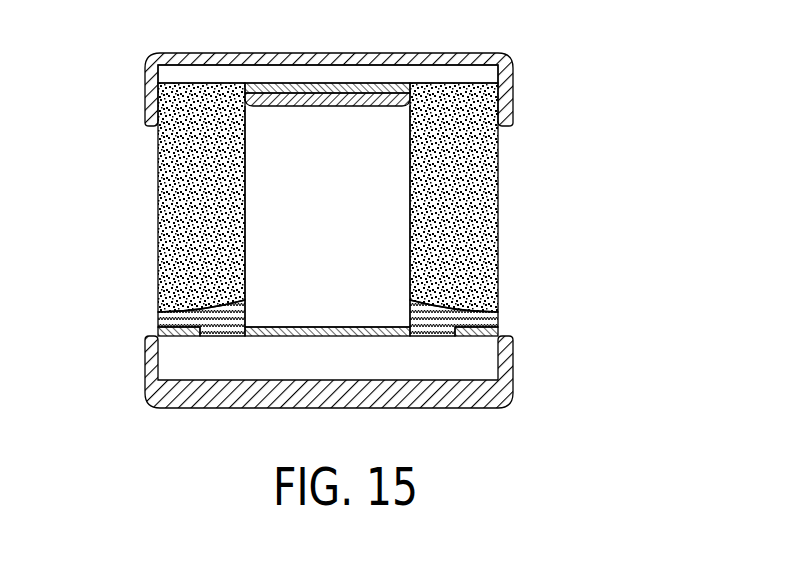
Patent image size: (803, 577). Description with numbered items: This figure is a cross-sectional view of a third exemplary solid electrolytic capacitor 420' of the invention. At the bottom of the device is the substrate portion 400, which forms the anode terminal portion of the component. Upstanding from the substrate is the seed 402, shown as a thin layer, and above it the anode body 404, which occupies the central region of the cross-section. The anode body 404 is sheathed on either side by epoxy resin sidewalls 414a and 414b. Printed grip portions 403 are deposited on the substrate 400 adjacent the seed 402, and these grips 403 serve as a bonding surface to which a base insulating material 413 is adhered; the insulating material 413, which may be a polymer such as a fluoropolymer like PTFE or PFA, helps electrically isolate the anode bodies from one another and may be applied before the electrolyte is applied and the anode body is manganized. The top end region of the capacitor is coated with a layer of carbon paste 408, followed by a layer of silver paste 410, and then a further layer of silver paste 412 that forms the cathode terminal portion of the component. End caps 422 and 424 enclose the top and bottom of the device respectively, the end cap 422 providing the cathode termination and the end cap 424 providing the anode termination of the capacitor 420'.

The substrate portion 400 is at (212, 373).
The seed 402 is at (333, 328).
The printed grip portion 403 is at (158, 340).
The anode body 404 is at (346, 214).
The layer of carbon paste 408 is at (297, 98).
The layer of silver paste 410 is at (345, 106).
The further layer of silver paste 412 is at (460, 73).
The base insulating material 413 is at (160, 320).
The epoxy resin sidewall 414a is at (165, 231).
The epoxy resin sidewall 414b is at (498, 226).
The capacitor 420' is at (586, 48).
The end cap 422 is at (513, 103).
The end cap 424 is at (513, 370).